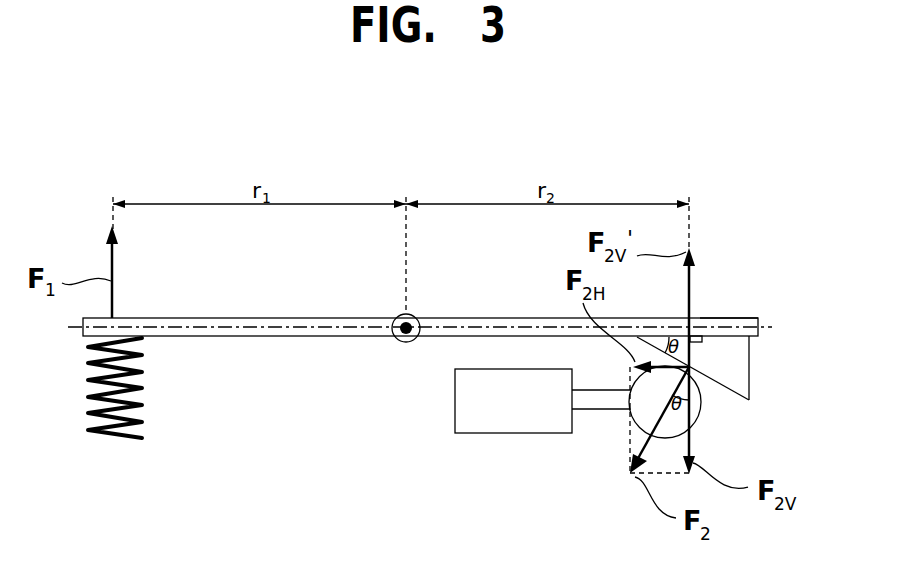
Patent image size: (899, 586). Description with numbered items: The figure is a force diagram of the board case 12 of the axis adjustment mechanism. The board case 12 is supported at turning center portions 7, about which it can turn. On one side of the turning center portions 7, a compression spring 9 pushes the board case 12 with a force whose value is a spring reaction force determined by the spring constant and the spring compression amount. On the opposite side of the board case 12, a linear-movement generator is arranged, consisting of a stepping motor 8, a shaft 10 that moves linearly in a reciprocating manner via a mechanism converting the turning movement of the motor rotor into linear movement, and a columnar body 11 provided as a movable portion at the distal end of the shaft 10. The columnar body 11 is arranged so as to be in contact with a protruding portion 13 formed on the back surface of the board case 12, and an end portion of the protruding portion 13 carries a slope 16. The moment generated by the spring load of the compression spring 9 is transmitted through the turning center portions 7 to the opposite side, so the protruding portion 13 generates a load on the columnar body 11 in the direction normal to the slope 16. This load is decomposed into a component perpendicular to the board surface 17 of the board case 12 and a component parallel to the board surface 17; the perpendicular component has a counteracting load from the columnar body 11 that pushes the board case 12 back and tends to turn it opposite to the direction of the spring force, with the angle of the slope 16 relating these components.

The turning center portions 7 is at (405, 343).
The stepping motor 8 is at (488, 423).
The compression spring 9 is at (141, 400).
The shaft 10 is at (592, 412).
The columnar body 11 is at (700, 405).
The board case 12 is at (296, 318).
The protruding portion 13 is at (735, 355).
The slope 16 is at (735, 388).
The board surface 17 is at (758, 325).